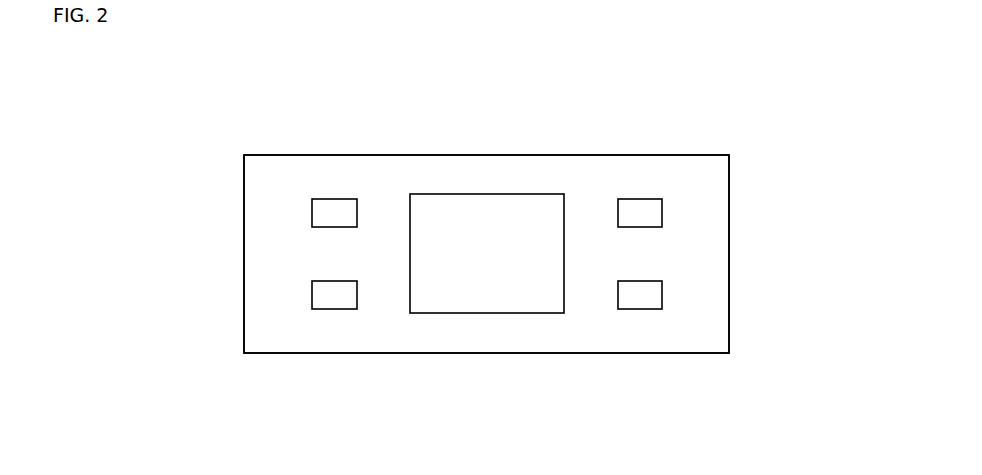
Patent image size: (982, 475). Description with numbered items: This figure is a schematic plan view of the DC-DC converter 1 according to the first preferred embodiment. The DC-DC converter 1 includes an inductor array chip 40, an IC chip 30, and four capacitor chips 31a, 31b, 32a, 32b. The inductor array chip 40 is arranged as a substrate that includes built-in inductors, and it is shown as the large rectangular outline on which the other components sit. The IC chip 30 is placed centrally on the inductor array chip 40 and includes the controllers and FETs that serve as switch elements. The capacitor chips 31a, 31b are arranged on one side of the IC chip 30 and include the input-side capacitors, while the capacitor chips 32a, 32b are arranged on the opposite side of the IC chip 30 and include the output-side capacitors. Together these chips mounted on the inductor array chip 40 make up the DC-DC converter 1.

The DC-DC converter 1 is at (705, 127).
The IC chip 30 is at (485, 194).
The capacitor chip 31a is at (336, 199).
The capacitor chip 31b is at (336, 309).
The capacitor chip 32a is at (639, 199).
The capacitor chip 32b is at (639, 309).
The inductor array chip 40 is at (700, 353).